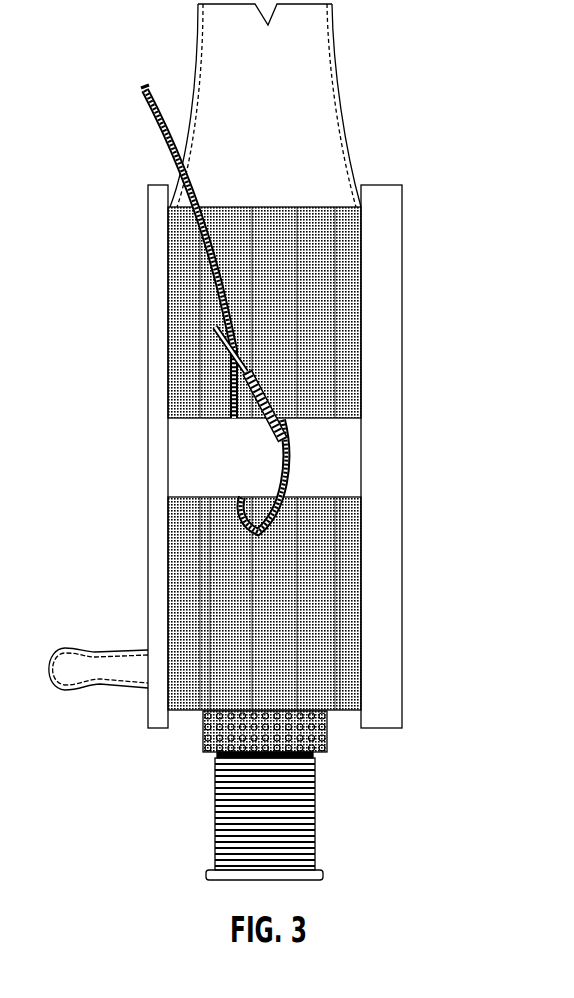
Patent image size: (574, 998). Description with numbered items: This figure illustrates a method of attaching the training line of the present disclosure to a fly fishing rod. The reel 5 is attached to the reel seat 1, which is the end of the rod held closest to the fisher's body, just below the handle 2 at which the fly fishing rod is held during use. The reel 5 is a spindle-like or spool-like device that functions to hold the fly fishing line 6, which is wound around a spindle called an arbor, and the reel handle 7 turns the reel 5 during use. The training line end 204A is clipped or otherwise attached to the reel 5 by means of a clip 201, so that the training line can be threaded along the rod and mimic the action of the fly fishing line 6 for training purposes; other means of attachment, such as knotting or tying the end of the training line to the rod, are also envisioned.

The reel seat 1 is at (217, 767).
The handle 2 is at (336, 104).
The reel 5 is at (392, 450).
The fly fishing line 6 is at (337, 712).
The reel handle 7 is at (65, 660).
The clip 201 is at (213, 330).
The training line end 204A is at (150, 110).